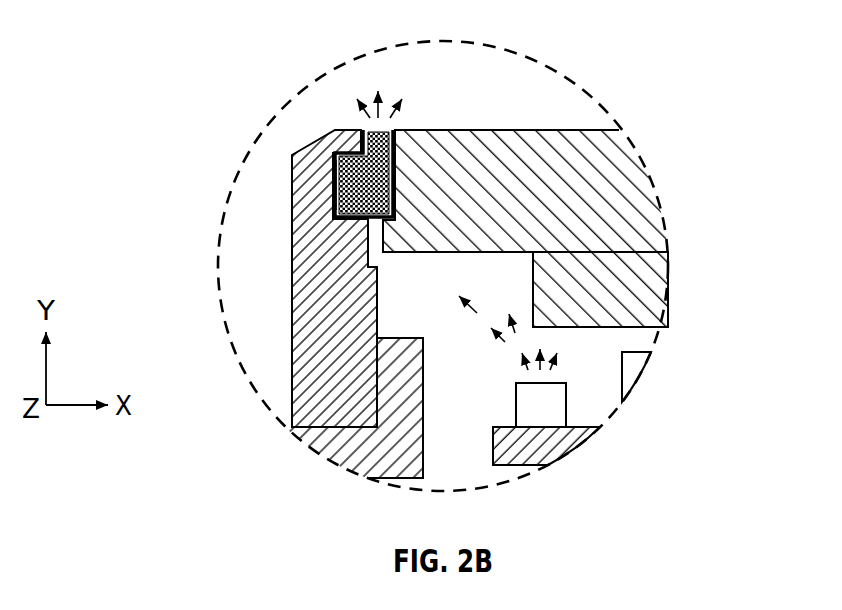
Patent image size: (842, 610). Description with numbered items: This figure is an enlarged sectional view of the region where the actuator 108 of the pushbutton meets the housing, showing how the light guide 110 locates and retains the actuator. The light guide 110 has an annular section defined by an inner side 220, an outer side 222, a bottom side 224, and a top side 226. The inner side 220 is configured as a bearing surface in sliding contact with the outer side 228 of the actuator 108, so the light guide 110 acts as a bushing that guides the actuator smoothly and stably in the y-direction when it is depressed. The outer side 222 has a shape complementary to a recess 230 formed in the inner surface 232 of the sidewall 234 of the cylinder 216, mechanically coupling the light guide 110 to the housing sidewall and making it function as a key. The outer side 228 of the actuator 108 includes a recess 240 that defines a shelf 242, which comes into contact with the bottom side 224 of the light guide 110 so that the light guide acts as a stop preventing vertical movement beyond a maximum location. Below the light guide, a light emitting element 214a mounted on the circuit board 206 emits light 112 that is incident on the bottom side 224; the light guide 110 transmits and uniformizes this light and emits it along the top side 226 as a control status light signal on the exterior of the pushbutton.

The light guide 110 is at (338, 100).
The actuator 108 is at (612, 146).
The control status light signal 112 is at (402, 312).
The circuit board 206 is at (575, 442).
The light emitting element 214a is at (541, 405).
The cylinder 216 is at (295, 436).
The inner side 220 is at (393, 153).
The outer side 222 is at (337, 167).
The bottom side 224 is at (306, 261).
The top side 226 is at (393, 130).
The outer side 228 is at (401, 182).
The recess 230 is at (333, 199).
The inner surface 232 is at (422, 426).
The sidewall 234 is at (282, 257).
The recess 240 is at (409, 140).
The shelf 242 is at (408, 227).